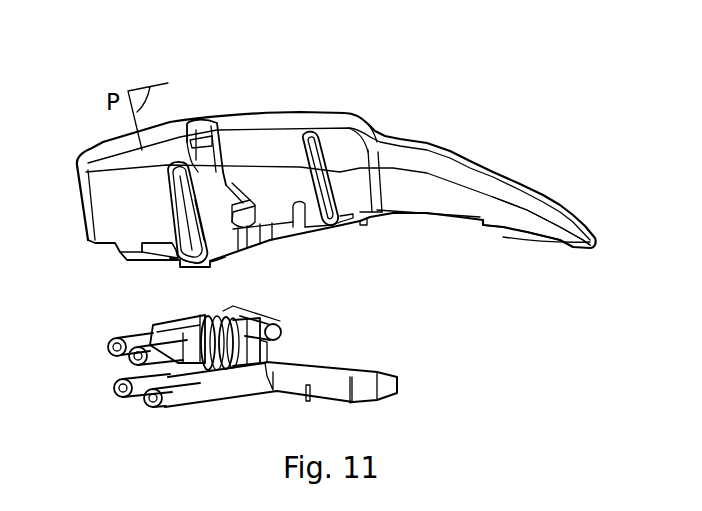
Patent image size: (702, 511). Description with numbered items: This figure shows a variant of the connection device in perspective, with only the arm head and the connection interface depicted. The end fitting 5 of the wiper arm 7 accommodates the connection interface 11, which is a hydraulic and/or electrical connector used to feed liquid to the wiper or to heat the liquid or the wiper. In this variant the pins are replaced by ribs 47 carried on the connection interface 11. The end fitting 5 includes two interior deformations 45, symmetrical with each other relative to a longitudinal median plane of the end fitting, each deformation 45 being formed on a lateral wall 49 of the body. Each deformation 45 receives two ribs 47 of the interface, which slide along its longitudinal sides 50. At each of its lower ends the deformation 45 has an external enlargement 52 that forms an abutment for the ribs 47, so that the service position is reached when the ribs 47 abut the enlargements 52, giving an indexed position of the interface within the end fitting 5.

The end fitting 5 is at (288, 112).
The wiper arm 7 is at (497, 177).
The connection interface 11 is at (227, 404).
The interior deformation 45 is at (198, 235).
The rib 47 is at (267, 343).
The lateral wall 49 is at (284, 185).
The longitudinal side 50 is at (180, 212).
The external enlargement 52 is at (188, 246).